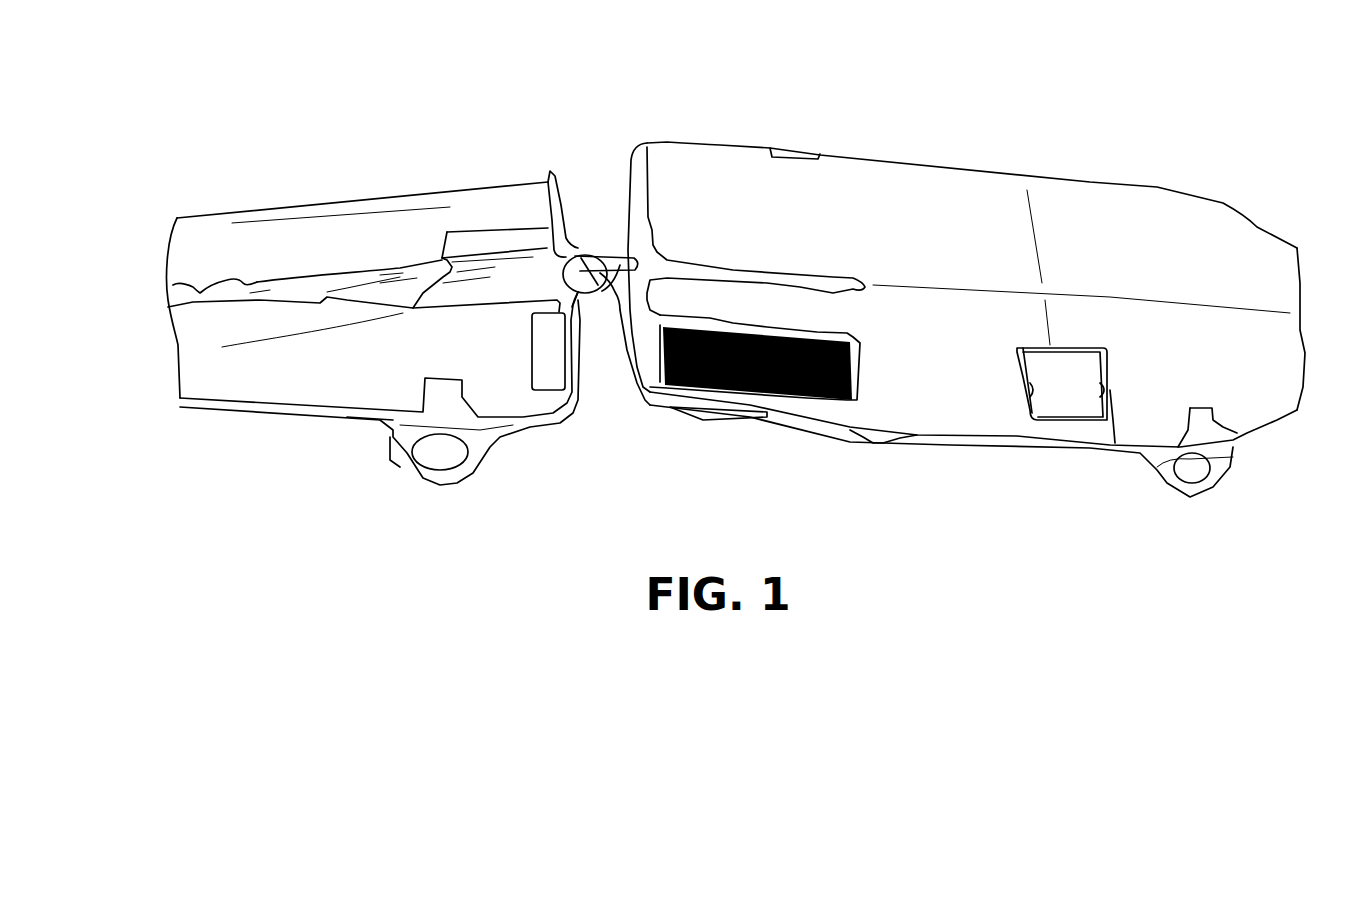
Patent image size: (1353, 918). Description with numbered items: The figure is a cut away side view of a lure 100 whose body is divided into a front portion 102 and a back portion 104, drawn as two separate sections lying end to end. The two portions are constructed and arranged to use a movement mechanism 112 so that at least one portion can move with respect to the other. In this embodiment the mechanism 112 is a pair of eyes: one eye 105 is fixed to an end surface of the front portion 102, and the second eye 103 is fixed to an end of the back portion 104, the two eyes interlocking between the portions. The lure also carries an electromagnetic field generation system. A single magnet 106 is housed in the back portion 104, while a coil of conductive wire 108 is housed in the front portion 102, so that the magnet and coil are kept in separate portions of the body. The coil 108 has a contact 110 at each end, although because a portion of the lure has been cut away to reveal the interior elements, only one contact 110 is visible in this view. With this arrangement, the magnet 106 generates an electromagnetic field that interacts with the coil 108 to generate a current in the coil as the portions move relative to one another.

The lure 100 is at (587, 136).
The front portion 102 is at (1260, 230).
The second eye 103 is at (553, 253).
The back portion 104 is at (177, 337).
The eye 105 is at (650, 257).
The magnet 106 is at (530, 347).
The coil of conductive wire 108 is at (876, 371).
The contact 110 is at (867, 452).
The movement mechanism 112 is at (598, 333).